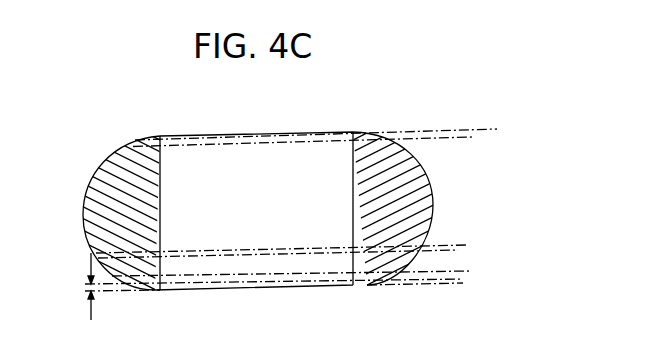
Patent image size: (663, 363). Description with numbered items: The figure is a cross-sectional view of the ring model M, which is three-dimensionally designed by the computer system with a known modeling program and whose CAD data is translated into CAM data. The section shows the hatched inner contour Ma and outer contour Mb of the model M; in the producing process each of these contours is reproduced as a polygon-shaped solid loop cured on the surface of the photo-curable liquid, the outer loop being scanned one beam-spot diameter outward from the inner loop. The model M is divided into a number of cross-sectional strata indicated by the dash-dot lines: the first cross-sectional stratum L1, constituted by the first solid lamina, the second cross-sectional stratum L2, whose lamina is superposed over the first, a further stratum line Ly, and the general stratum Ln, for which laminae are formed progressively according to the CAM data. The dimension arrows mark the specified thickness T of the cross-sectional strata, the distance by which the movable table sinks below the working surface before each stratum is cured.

The model M is at (255, 160).
The inner contour Ma is at (163, 168).
The outer contour Mb is at (133, 147).
The reference line Ly is at (326, 133).
The cross-sectional stratum Ln is at (465, 248).
The second cross-sectional stratum L2 is at (468, 272).
The first cross-sectional stratum L1 is at (463, 283).
The specified thickness of cross-sectional strata T is at (90, 301).